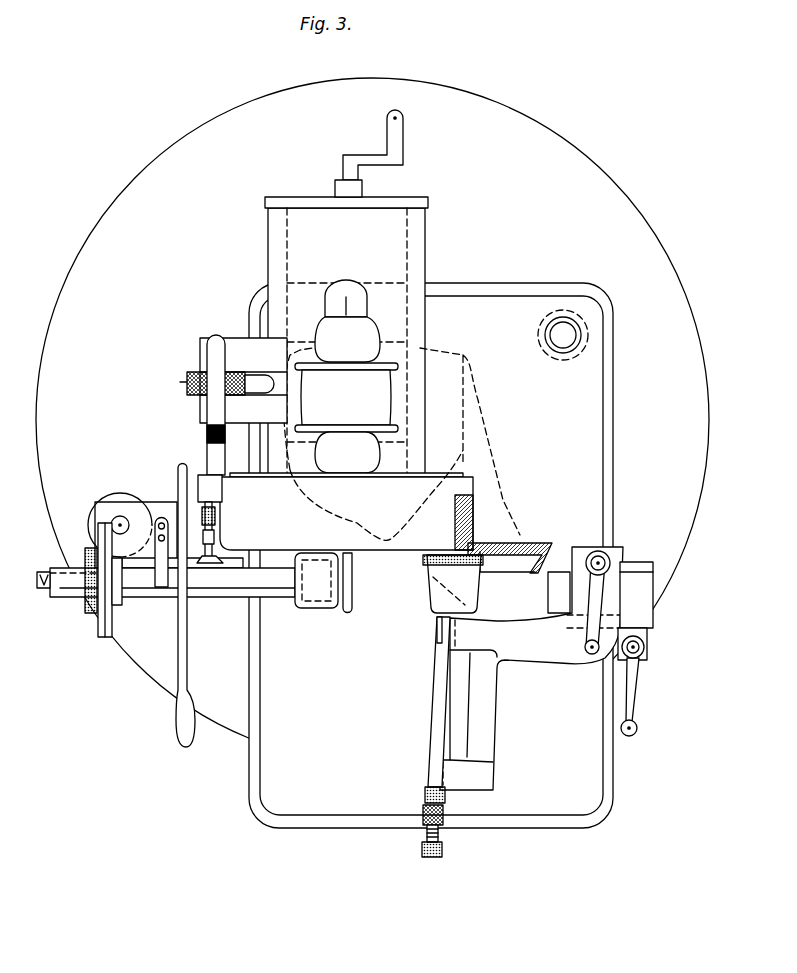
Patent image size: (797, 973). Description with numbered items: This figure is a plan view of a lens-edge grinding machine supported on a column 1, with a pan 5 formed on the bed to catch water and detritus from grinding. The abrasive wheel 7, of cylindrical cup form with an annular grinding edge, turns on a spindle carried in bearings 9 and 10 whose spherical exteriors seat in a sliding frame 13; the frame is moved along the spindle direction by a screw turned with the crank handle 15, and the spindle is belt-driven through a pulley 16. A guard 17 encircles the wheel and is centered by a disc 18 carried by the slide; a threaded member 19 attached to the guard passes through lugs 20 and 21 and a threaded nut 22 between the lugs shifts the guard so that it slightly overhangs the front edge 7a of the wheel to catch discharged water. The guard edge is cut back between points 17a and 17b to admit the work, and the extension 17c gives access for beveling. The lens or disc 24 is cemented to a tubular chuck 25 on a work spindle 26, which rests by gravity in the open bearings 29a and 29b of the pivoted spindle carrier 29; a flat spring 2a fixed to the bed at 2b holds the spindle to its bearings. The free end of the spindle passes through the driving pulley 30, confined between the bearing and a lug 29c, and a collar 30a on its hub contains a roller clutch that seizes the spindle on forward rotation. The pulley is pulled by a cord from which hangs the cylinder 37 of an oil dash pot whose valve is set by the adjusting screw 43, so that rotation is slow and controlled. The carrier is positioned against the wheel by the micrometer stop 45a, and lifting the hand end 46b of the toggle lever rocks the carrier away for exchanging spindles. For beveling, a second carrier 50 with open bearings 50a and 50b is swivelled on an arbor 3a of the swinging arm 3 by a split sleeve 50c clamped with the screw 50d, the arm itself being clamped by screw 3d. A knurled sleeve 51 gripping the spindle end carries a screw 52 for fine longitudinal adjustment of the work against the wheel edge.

The column 1 is at (372, 420).
The flat spring 2a is at (165, 587).
The fixing point of flat spring 2b is at (162, 517).
The swinging arm 3 is at (636, 595).
The arbor 3a is at (553, 600).
The clamping screw 3d is at (645, 647).
The pan 5 is at (431, 555).
The abrasive wheel 7 is at (475, 512).
The front edge of abrasive wheel 7a is at (423, 552).
The bearing 9 is at (347, 452).
The bearing 10 is at (347, 321).
The sliding frame 13 is at (346, 336).
The crank handle 15 is at (400, 125).
The pulley 16 is at (346, 397).
The guard 17 is at (473, 493).
The cut-back point of guard 17a is at (295, 550).
The cut-back point of guard 17b is at (373, 550).
The guard extension 17c is at (552, 547).
The disc 18 is at (463, 475).
The threaded member 19 is at (217, 455).
The lug 20 is at (253, 411).
The lug 21 is at (243, 380).
The threaded nut 22 is at (187, 382).
The lens or disc 24 is at (427, 556).
The tubular chuck 25 is at (433, 595).
The work spindle 26 is at (217, 583).
The spindle carrier 29 is at (237, 597).
The open bearing 29a is at (140, 592).
The open bearing 29b is at (280, 597).
The lug 29c is at (73, 592).
The driving wheel or pulley 30 is at (100, 640).
The collar 30a is at (92, 613).
The dash pot cylinder 37 is at (118, 493).
The adjusting screw 43 is at (117, 517).
The micrometer stop 45a is at (218, 520).
The hand end of operating lever 46b is at (177, 698).
The second spindle carrier 50 is at (531, 668).
The open bearing 50a is at (476, 637).
The open bearing 50b is at (468, 774).
The sleeve or hub 50c is at (607, 560).
The clamping screw 50d is at (600, 558).
The knurled sleeve 51 is at (445, 795).
The screw 52 is at (440, 838).